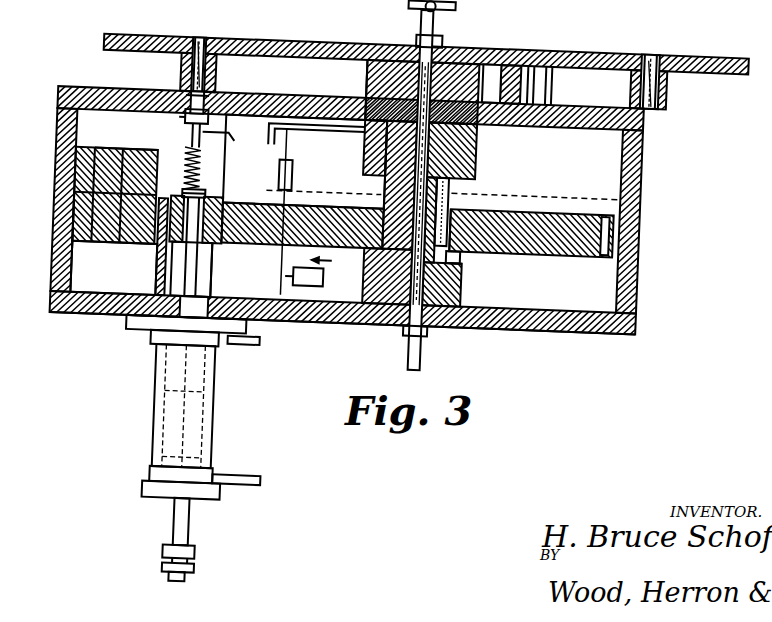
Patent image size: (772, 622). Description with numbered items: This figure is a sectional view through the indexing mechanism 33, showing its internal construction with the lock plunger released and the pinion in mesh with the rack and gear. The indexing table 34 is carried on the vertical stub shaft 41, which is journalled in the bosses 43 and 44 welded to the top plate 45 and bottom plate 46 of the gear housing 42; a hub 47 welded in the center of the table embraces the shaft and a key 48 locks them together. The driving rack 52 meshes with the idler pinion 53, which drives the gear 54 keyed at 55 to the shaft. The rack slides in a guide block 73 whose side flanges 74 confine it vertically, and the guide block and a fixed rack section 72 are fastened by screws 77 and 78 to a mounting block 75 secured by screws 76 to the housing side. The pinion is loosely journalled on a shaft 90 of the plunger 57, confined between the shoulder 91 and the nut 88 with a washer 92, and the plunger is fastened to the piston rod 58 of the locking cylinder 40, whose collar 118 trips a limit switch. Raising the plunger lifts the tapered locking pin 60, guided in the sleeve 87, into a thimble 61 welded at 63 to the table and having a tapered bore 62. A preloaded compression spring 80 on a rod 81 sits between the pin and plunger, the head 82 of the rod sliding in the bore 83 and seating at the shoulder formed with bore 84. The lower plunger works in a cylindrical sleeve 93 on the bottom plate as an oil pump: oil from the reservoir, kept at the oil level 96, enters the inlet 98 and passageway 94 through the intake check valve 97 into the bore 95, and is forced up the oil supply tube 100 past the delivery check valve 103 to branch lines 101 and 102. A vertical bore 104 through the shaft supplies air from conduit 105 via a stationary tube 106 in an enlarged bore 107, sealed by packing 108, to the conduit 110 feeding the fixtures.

The indexing mechanism 33 is at (646, 266).
The indexing table 34 is at (705, 46).
The locking cylinder 40 is at (228, 396).
The stub shaft 41 is at (404, 62).
The gear housing 42 is at (645, 148).
The boss 43 is at (480, 133).
The boss 44 is at (470, 283).
The top plate 45 is at (604, 100).
The bottom plate 46 is at (580, 326).
The hub 47 is at (367, 85).
The key 48 is at (488, 62).
The driving rack 52 is at (165, 258).
The idler pinion 53 is at (248, 214).
The gear 54 is at (572, 210).
The key 55 is at (455, 192).
The plunger 57 is at (185, 278).
The piston rod 58 is at (162, 345).
The locking pin 60 is at (212, 106).
The indexing thimble 61 is at (180, 75).
The tapered bore 62 is at (205, 52).
The weld 63 is at (194, 46).
The fixed rack section 72 is at (125, 168).
The guide block 73 is at (104, 262).
The side flanges 74 is at (146, 168).
The mounting block 75 is at (80, 258).
The screws 76 is at (80, 216).
The screws 77 is at (80, 236).
The screws 78 is at (60, 164).
The compression spring 80 is at (204, 176).
The rod 81 is at (194, 150).
The head 82 is at (186, 126).
The bore 83 is at (186, 104).
The bore 84 is at (236, 148).
The sleeve 87 is at (184, 126).
The nut 88 is at (190, 198).
The shaft 90 is at (214, 244).
The shoulder 91 is at (222, 250).
The washer 92 is at (212, 200).
The cylindrical sleeve 93 is at (220, 282).
The oil passageway 94 is at (256, 334).
The bore 95 is at (250, 351).
The oil level 96 is at (644, 190).
The intake check valve 97 is at (338, 264).
The oil inlet 98 is at (332, 286).
The oil supply tube 100 is at (300, 196).
The branch line 101 is at (340, 136).
The branch line 102 is at (290, 129).
The delivery check valve 103 is at (296, 178).
The vertical bore 104 is at (440, 80).
The conduit 105 is at (432, 364).
The tube 106 is at (468, 258).
The enlarged bore 107 is at (492, 207).
The packing 108 is at (470, 268).
The conduit 110 is at (436, 22).
The lock cylinder collar 118 is at (180, 560).